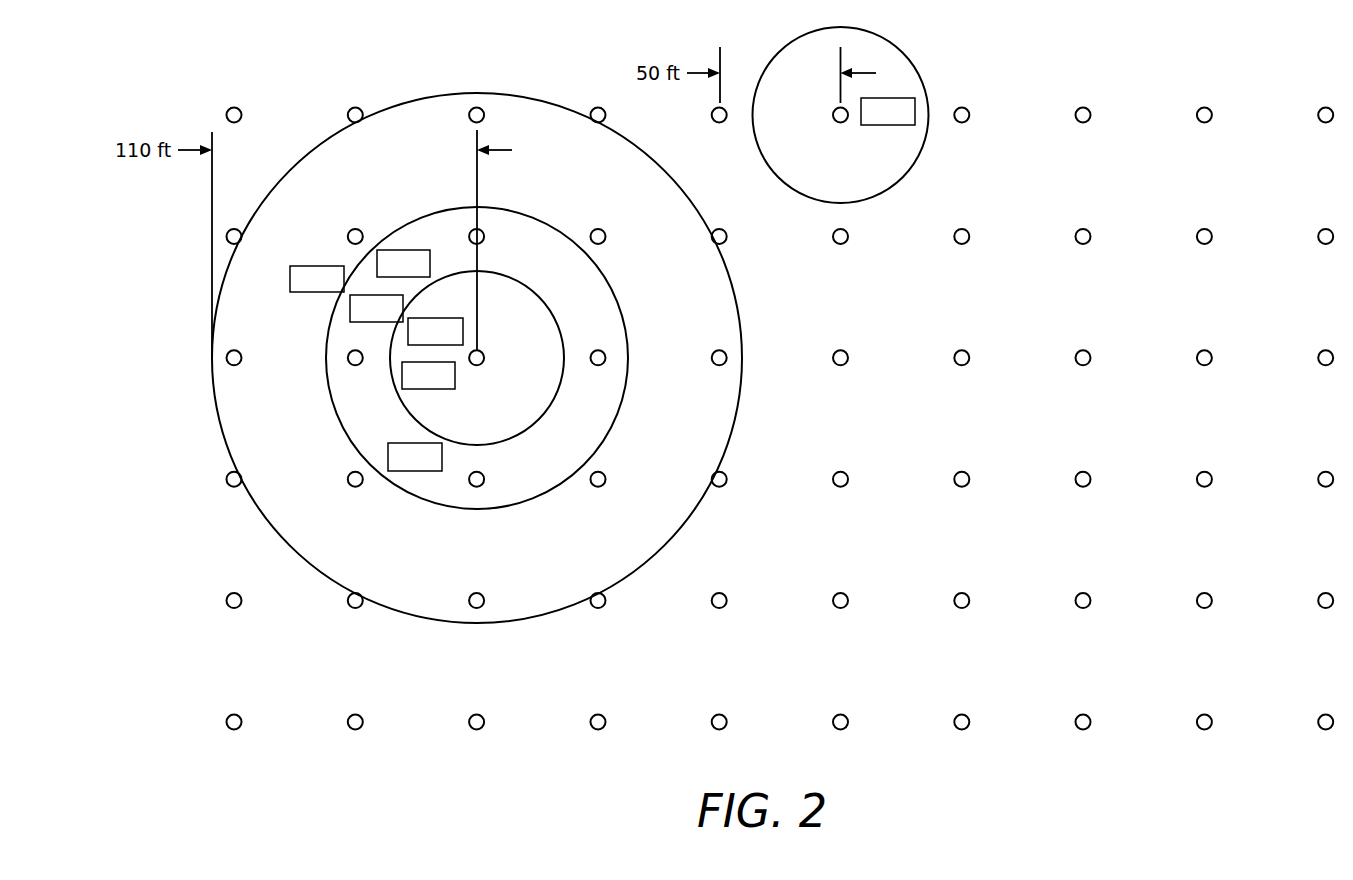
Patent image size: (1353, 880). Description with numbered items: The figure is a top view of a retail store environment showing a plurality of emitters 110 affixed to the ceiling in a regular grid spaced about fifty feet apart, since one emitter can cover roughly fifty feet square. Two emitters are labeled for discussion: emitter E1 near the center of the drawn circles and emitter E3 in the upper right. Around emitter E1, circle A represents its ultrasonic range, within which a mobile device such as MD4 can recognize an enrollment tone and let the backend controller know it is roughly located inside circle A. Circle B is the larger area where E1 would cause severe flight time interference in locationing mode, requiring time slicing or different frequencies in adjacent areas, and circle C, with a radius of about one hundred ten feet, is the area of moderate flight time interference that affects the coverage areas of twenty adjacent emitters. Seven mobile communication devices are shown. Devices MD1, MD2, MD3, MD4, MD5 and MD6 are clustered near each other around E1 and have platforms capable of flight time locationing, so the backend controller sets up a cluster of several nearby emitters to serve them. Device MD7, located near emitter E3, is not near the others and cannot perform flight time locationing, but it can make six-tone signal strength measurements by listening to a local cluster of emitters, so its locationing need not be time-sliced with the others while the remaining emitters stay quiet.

The emitters 110 is at (961, 107).
The emitter E1 is at (476, 372).
The emitter E3 is at (841, 115).
The circle A is at (477, 358).
The circle B is at (477, 358).
The circle C is at (477, 358).
The mobile communication device MD 1 MD1 is at (317, 279).
The mobile communication device MD 2 MD2 is at (403, 263).
The mobile communication device MD 3 MD3 is at (376, 308).
The mobile communication device MD 4 MD4 is at (435, 331).
The mobile communication device MD 5 MD5 is at (428, 375).
The mobile communication device MD 6 MD6 is at (415, 457).
The mobile communication device MD 7 MD7 is at (888, 111).